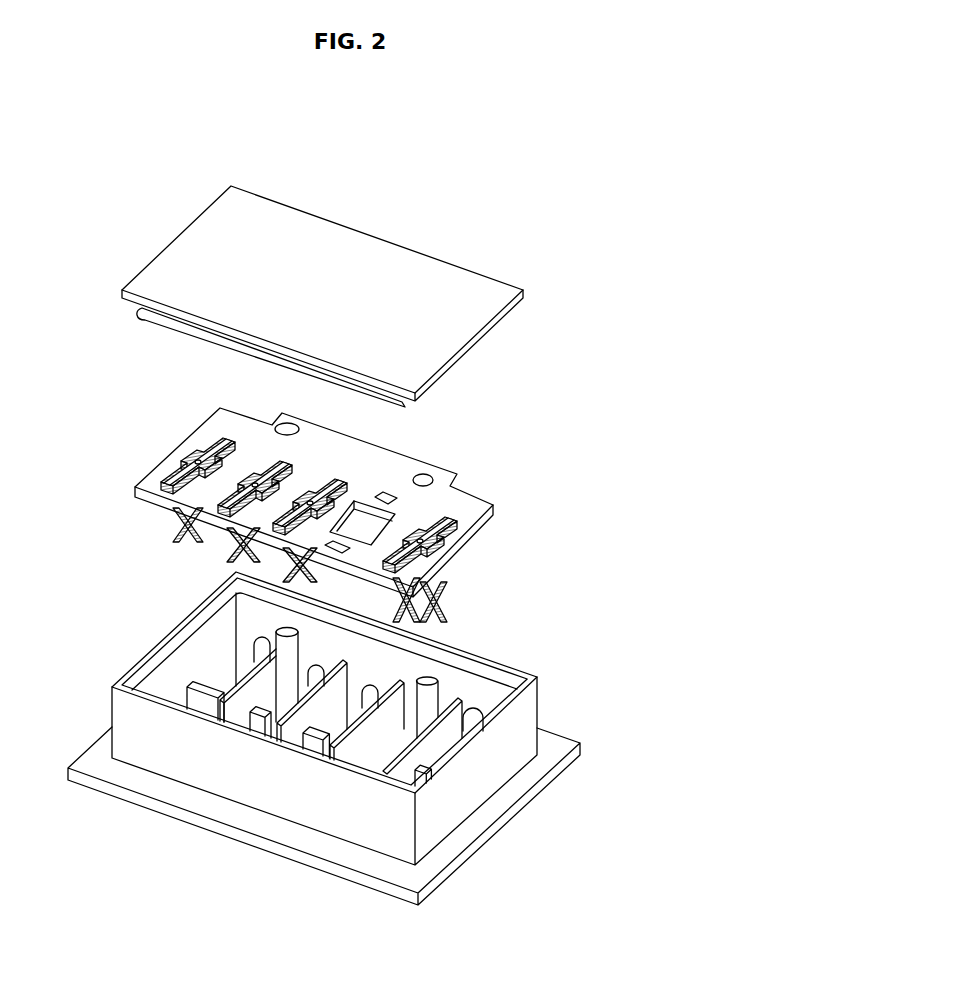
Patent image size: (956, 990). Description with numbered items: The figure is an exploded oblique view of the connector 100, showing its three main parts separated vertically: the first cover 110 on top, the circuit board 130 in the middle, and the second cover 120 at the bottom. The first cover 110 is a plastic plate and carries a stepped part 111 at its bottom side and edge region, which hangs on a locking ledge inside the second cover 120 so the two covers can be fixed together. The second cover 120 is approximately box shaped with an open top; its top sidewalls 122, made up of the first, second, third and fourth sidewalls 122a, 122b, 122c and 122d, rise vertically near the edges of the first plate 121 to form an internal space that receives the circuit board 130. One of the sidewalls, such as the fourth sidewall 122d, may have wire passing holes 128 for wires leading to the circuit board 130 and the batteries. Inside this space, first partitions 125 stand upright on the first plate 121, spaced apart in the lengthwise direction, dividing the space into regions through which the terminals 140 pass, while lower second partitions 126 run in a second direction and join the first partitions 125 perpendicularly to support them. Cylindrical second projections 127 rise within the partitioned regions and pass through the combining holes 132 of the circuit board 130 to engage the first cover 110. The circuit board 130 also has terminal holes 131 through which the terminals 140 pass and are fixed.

The connector 100 is at (599, 221).
The first cover 110 is at (307, 294).
The stepped part 111 is at (166, 322).
The second cover 120 is at (589, 647).
The first plate 121 is at (358, 860).
The top sidewalls 122 is at (350, 748).
The first sidewall 122a is at (443, 825).
The second sidewall 122b is at (190, 758).
The third sidewall 122c is at (155, 643).
The fourth sidewall 122d is at (503, 668).
The first partitions 125 is at (408, 745).
The second partitions 126 is at (317, 735).
The second projections 127 is at (428, 681).
The wire passing holes 128 is at (477, 722).
The circuit board 130 is at (350, 515).
The terminal holes 131 is at (373, 523).
The combining holes 132 is at (424, 474).
The terminals 140 is at (440, 533).